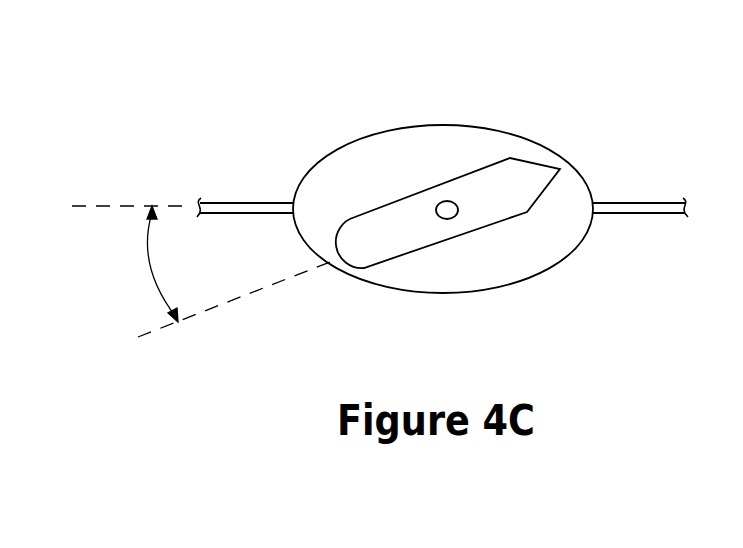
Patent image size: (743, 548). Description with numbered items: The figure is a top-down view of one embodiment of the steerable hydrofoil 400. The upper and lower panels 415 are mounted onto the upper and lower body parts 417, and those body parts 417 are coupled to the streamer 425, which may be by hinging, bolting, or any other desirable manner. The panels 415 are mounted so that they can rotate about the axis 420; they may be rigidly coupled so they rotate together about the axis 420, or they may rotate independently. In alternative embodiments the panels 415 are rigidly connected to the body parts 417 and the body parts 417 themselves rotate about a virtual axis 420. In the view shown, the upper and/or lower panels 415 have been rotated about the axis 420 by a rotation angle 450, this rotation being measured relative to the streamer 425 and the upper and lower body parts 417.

The steerable hydrofoil 400 is at (445, 187).
The upper and lower panels 415 is at (493, 165).
The upper and lower body parts 417 is at (438, 293).
The axis 420 is at (449, 219).
The streamer 425 is at (250, 203).
The rotation angle 450 is at (151, 268).